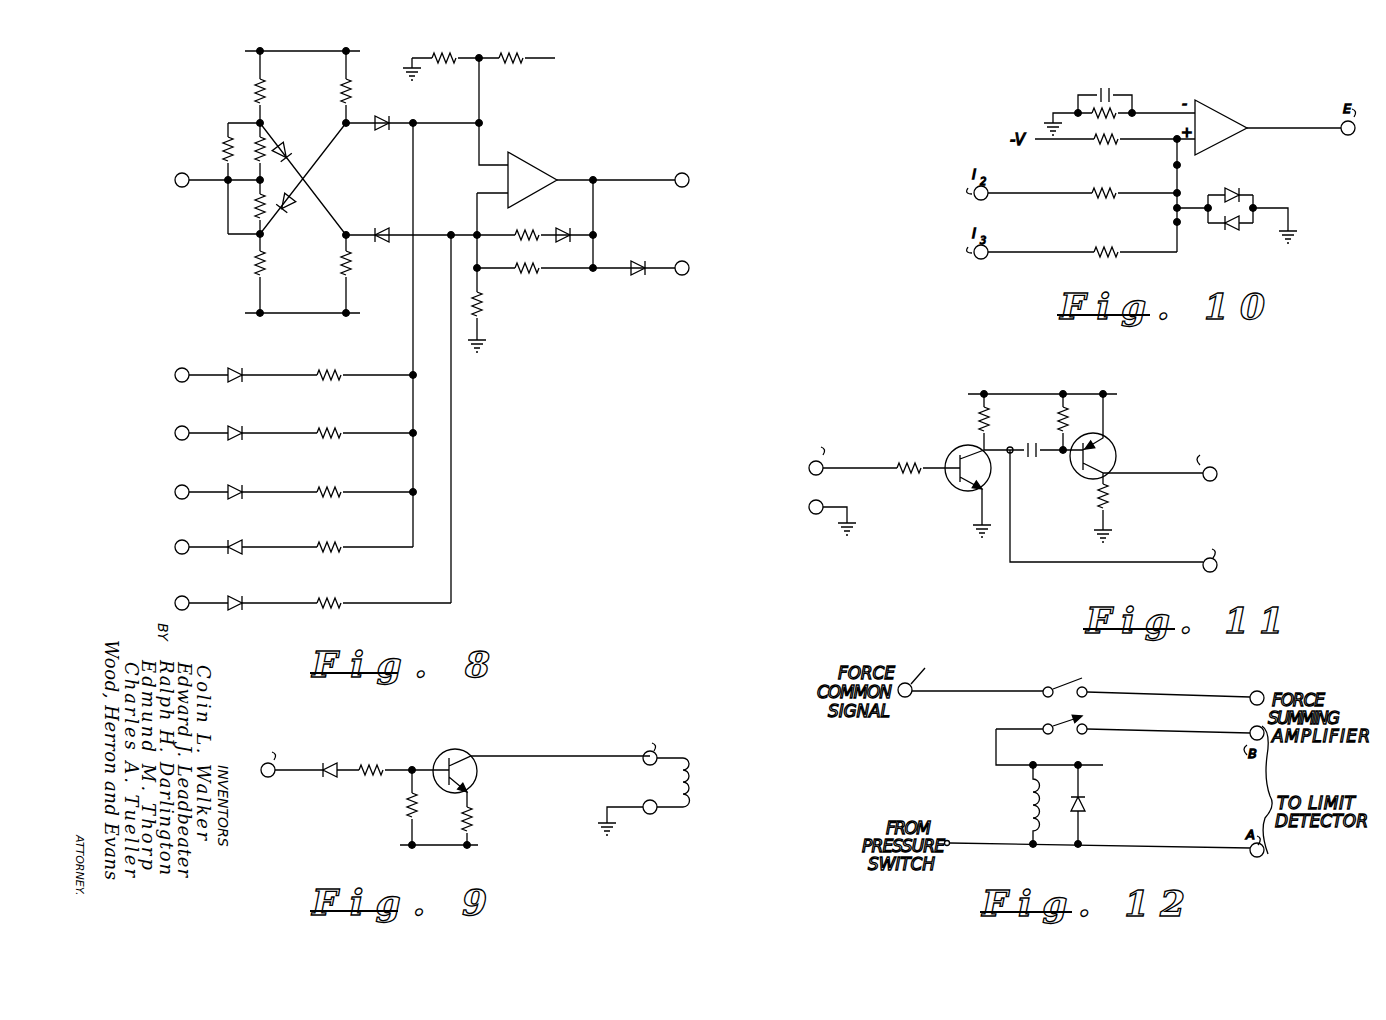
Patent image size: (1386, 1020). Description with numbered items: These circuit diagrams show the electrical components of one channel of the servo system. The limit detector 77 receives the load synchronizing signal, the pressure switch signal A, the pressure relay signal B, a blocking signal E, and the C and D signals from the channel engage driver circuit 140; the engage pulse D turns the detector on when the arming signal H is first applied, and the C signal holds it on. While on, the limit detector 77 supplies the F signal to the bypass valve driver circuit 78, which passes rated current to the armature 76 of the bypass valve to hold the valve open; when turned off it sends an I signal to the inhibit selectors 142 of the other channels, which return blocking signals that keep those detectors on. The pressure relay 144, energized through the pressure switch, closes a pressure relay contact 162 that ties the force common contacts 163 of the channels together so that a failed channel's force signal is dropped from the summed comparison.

In FIG. 8, the limit detector circuit 77 is at (503, 574).
In FIG. 9, the bypass valve driver circuit 78 is at (536, 856).
In FIG. 9, the armature 76 is at (696, 783).
In FIG. 10, the inhibit selector 142 is at (1231, 250).
In FIG. 11, the channel engage driver circuit 140 is at (1086, 572).
In FIG. 12, the pressure relay contact 162 is at (1073, 673).
In FIG. 12, the force common contacts 163 is at (908, 697).
In FIG. 12, the pressure relay 144 is at (1153, 862).